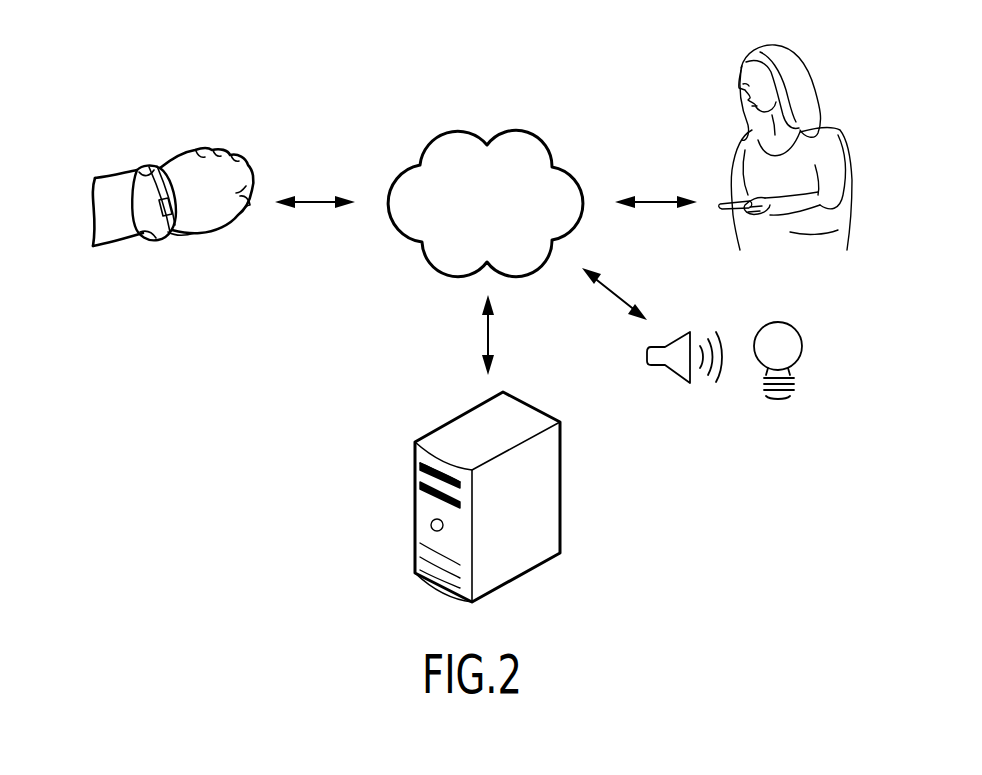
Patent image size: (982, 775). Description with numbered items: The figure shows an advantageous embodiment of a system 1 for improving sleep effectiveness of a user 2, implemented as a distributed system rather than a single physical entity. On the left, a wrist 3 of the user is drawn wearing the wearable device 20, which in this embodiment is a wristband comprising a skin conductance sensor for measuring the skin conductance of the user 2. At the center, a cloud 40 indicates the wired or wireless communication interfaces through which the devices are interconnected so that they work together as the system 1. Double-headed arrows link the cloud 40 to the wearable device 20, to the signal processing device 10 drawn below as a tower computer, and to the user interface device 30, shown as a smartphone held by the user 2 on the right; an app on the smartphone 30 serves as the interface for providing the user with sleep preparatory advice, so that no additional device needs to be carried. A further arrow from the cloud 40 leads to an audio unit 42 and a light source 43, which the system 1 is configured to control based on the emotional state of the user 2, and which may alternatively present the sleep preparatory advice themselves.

The system 1 is at (643, 81).
The user 2 is at (798, 160).
The wrist of user 3 is at (149, 173).
The signal processing device 10 is at (562, 484).
The wearable device 20 is at (142, 166).
The user interface device 30 is at (721, 211).
The cloud 40 is at (452, 131).
The audio unit 42 is at (659, 372).
The light source 43 is at (778, 401).